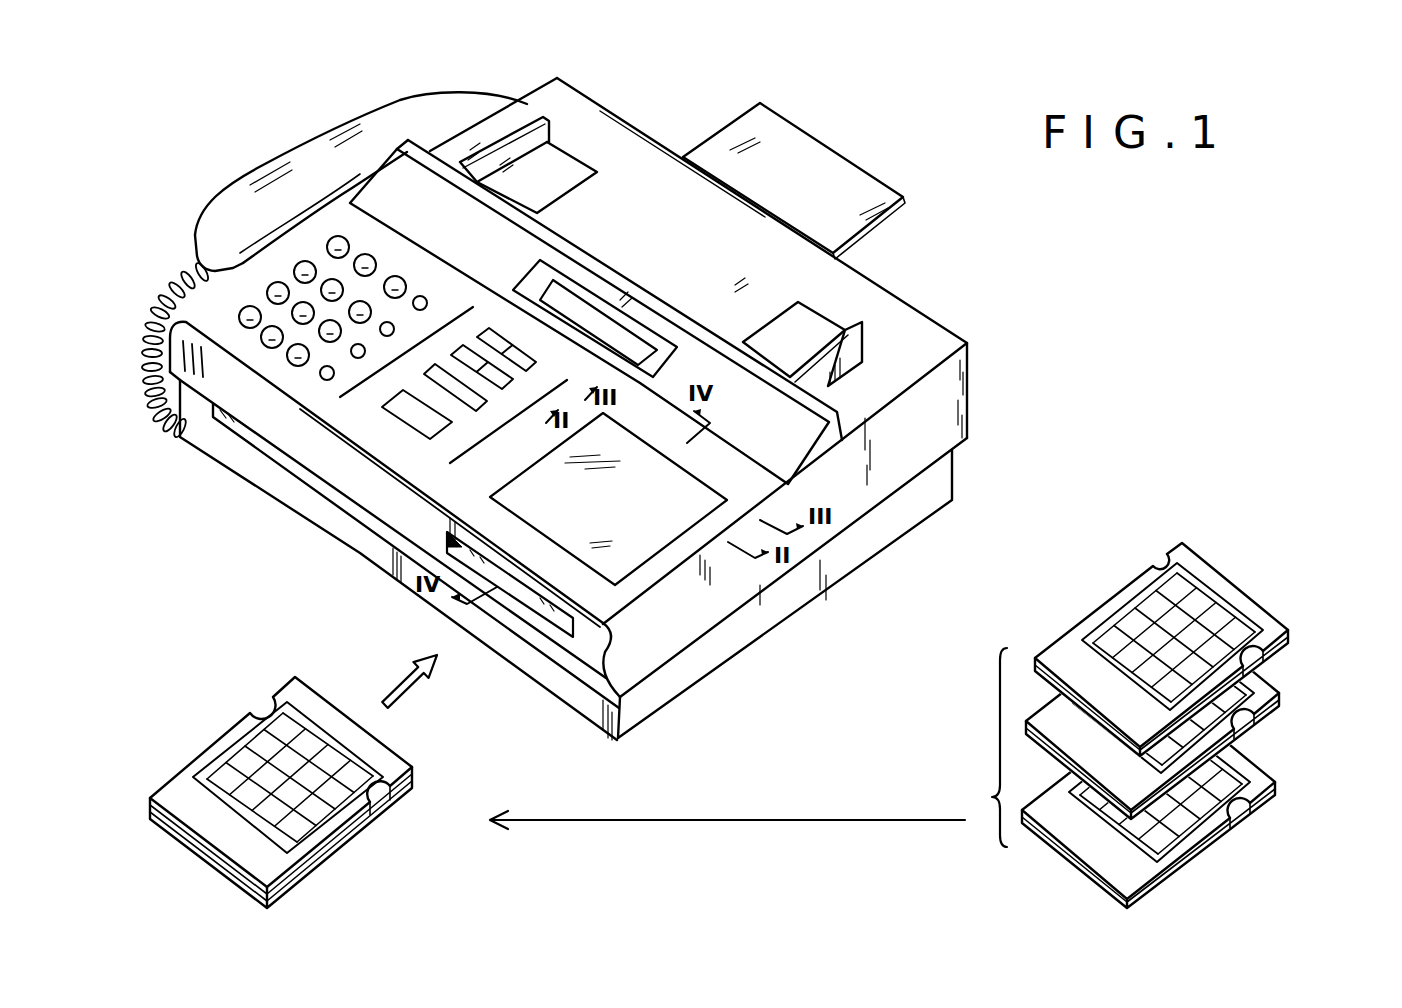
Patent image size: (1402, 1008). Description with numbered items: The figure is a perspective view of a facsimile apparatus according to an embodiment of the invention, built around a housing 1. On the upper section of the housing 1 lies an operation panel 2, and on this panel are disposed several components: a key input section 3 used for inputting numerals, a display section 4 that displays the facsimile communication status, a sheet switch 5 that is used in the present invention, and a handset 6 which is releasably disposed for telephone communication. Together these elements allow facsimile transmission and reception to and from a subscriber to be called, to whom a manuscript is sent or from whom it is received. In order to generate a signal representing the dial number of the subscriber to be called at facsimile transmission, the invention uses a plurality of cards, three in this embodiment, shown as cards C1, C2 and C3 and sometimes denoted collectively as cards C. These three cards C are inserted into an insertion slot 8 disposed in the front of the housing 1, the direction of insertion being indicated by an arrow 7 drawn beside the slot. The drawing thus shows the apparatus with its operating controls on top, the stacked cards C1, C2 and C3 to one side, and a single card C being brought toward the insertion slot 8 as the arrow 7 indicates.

The housing 1 is at (960, 398).
The operation panel 2 is at (412, 458).
The key input section 3 is at (287, 360).
The display section 4 is at (410, 425).
The sheet switch 5 is at (667, 543).
The handset 6 is at (345, 137).
The arrow 7 is at (414, 690).
The insertion slot 8 is at (547, 607).
The cards C is at (423, 762).
The card C1 is at (1265, 620).
The card C2 is at (1270, 690).
The card C3 is at (1257, 780).